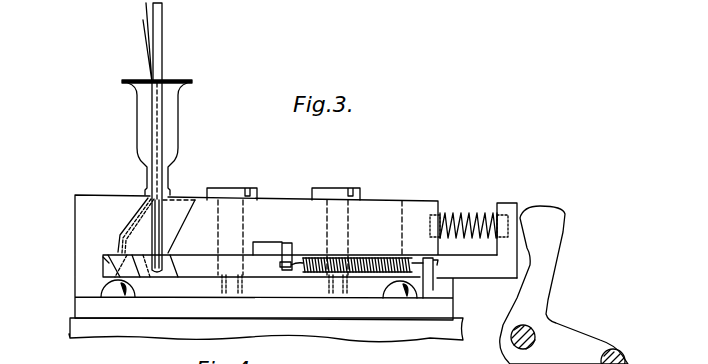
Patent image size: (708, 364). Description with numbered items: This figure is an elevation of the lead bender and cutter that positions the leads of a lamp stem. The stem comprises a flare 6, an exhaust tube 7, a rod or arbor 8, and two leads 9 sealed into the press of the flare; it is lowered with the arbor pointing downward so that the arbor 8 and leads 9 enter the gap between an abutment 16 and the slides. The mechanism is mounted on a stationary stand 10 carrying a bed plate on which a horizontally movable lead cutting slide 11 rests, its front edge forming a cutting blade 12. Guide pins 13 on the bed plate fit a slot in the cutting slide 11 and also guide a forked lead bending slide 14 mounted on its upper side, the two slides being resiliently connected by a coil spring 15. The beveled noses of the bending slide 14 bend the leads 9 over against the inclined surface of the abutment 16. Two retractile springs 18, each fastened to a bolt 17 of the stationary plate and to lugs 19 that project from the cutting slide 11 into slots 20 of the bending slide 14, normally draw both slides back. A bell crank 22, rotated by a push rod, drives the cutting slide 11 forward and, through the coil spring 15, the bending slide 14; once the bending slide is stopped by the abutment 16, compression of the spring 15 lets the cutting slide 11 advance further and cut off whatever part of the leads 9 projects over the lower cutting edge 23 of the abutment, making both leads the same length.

The flare 6 is at (172, 117).
The exhaust tube 7 is at (163, 32).
The arbor 8 is at (163, 207).
The leads 9 is at (130, 225).
The stand 10 is at (126, 332).
The lead cutting slide 11 is at (492, 272).
The cutting blade 12 is at (171, 277).
The guide pins 13 is at (312, 190).
The lead bending slide 14 is at (373, 201).
The coil spring 15 is at (462, 213).
The abutment 16 is at (103, 196).
The bolt 17 is at (426, 298).
The retractile springs 18 is at (315, 272).
The lugs 19 is at (280, 264).
The slots 20 is at (267, 242).
The bell crank 22 is at (555, 247).
The lower cutting edge 23 is at (103, 259).